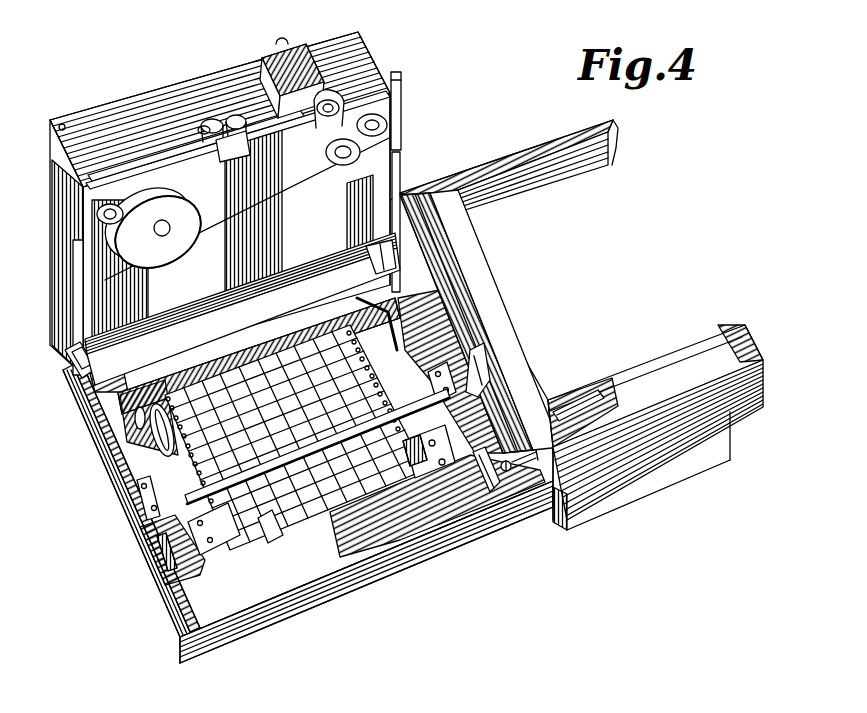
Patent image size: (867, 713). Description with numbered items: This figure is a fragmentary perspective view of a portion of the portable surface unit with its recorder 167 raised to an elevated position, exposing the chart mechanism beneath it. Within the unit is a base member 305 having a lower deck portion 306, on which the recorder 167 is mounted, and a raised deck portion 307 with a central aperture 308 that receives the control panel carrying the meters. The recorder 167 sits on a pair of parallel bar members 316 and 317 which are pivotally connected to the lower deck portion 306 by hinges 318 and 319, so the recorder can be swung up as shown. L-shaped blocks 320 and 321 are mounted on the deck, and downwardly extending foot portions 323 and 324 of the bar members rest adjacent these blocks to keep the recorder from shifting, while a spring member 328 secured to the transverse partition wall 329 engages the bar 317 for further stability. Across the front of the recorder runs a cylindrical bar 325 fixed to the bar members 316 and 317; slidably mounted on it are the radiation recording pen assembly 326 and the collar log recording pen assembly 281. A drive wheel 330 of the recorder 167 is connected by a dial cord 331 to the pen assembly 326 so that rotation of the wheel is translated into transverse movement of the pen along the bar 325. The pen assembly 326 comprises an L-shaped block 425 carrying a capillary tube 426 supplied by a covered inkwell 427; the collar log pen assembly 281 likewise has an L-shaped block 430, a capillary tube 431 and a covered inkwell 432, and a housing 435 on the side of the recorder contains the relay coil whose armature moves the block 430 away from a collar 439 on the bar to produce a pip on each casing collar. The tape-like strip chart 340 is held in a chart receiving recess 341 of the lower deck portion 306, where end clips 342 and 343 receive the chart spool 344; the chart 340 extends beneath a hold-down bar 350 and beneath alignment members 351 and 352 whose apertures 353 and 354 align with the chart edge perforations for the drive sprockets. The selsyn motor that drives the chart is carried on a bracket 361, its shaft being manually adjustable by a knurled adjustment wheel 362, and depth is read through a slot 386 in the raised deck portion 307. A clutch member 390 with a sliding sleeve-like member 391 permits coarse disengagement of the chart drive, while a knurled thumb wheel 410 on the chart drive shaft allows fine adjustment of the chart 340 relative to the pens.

The recorder 167 is at (132, 104).
The collar log recording pen assembly 281 is at (333, 82).
The base member 305 is at (580, 127).
The lower deck portion 306 is at (232, 600).
The raised deck portion 307 is at (462, 240).
The central aperture 308 is at (516, 336).
The bar member 316 is at (72, 302).
The bar member 317 is at (402, 164).
The hinge 318 is at (66, 376).
The hinge 319 is at (352, 270).
The L-shaped block 320 is at (137, 496).
The L-shaped block 321 is at (447, 368).
The foot portion 323 is at (110, 246).
The foot portion 324 is at (404, 126).
The cylindrical bar 325 is at (184, 162).
The radiation recording pen assembly 326 is at (212, 117).
The spring member 328 is at (488, 380).
The transverse partition wall 329 is at (468, 318).
The drive wheel 330 is at (172, 242).
The dial cord 331 is at (270, 222).
The strip chart 340 is at (290, 524).
The chart receiving recess 341 is at (292, 338).
The end clip 342 is at (135, 426).
The end clip 343 is at (390, 314).
The chart spool 344 is at (170, 444).
The hold-down bar 350 is at (198, 497).
The alignment member 351 is at (230, 550).
The alignment member 352 is at (432, 470).
The aperture 353 is at (274, 541).
The aperture 354 is at (412, 470).
The bracket 361 is at (684, 470).
The knurled adjustment wheel 362 is at (488, 480).
The slot 386 is at (593, 392).
The clutch member 390 is at (510, 474).
The sleeve-like member 391 is at (522, 455).
The knurled thumb wheel 410 is at (157, 556).
The L-shaped block 425 is at (230, 160).
The capillary tube 426 is at (236, 114).
The covered inkwell 427 is at (200, 128).
The L-shaped block 430 is at (312, 144).
The capillary tube 431 is at (327, 152).
The covered inkwell 432 is at (334, 100).
The housing 435 is at (284, 56).
The collar 439 is at (393, 76).